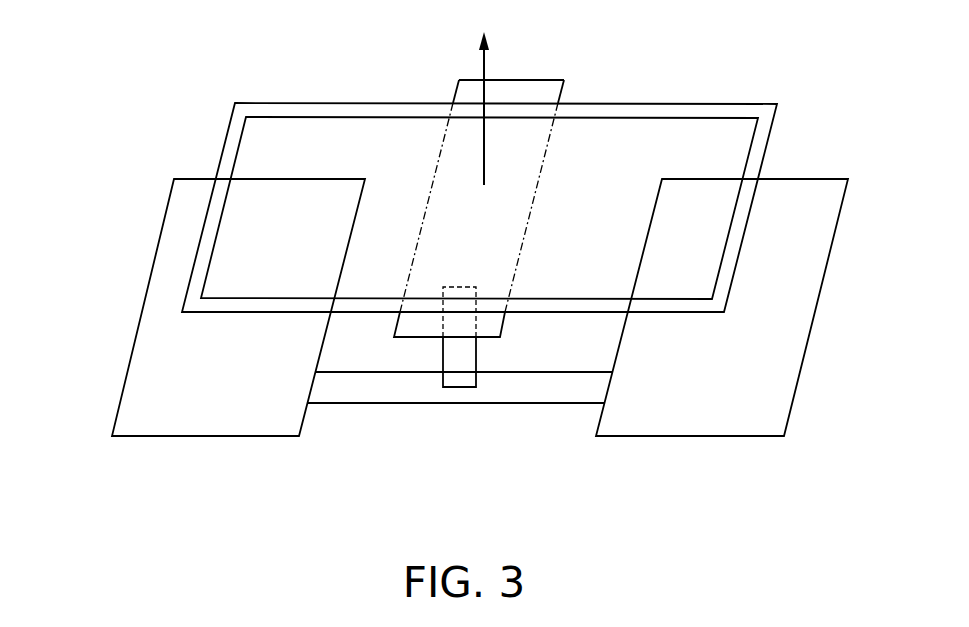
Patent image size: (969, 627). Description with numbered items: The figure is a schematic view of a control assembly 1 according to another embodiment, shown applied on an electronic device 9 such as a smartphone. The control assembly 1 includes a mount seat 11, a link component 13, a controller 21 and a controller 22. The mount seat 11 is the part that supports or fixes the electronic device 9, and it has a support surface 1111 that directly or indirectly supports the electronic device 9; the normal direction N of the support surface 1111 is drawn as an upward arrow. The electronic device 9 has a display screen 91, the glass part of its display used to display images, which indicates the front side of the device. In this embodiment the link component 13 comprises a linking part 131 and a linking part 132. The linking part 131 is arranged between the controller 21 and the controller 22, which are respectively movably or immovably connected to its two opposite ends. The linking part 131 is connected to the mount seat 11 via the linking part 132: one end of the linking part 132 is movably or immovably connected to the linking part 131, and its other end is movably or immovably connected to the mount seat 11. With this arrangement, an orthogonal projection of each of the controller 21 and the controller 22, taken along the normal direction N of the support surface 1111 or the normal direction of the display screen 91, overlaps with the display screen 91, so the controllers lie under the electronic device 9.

The control assembly 1 is at (116, 321).
The electronic device 9 is at (700, 103).
The display screen 91 is at (628, 162).
The mount seat 11 is at (531, 72).
The support surface 1111 is at (457, 183).
The link component 13 is at (370, 460).
The linking part 131 is at (412, 388).
The linking part 132 is at (460, 365).
The controller 21 is at (197, 418).
The controller 22 is at (714, 418).